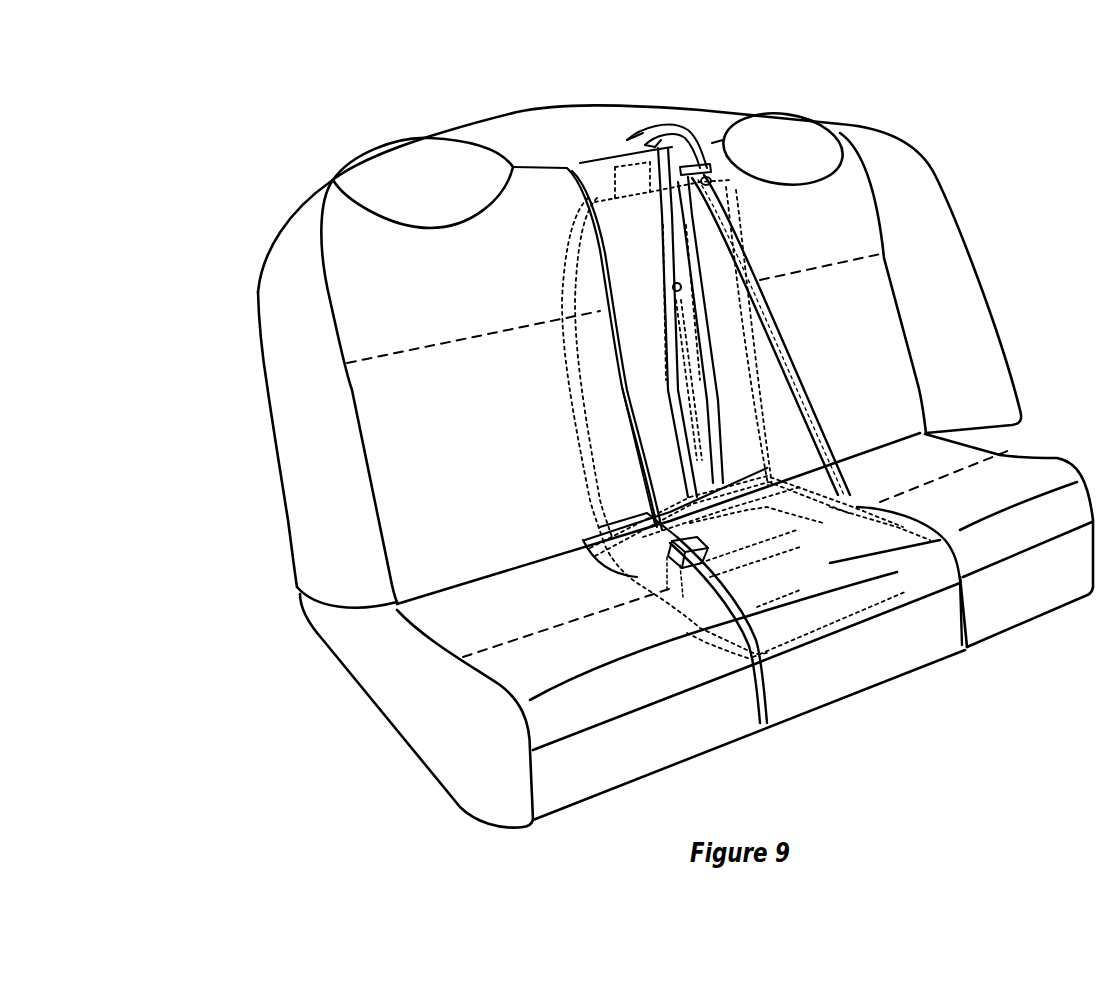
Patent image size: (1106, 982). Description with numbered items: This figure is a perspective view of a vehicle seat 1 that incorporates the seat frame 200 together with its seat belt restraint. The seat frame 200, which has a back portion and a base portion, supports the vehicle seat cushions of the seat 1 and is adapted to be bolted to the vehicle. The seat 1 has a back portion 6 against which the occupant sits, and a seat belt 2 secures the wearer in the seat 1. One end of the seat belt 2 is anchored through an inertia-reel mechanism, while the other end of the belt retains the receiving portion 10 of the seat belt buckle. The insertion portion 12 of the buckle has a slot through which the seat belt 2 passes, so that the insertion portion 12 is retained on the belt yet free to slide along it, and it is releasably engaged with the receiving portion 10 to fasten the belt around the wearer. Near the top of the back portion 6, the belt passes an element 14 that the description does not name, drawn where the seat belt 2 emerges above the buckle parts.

The vehicle seat 1 is at (283, 177).
The seat belt 2 is at (797, 367).
The back portion 6 is at (635, 333).
The receiving portion 10 is at (632, 575).
The insertion portion 12 is at (737, 180).
The belt anchor ring 14 is at (693, 140).
The seat frame 200 is at (558, 263).